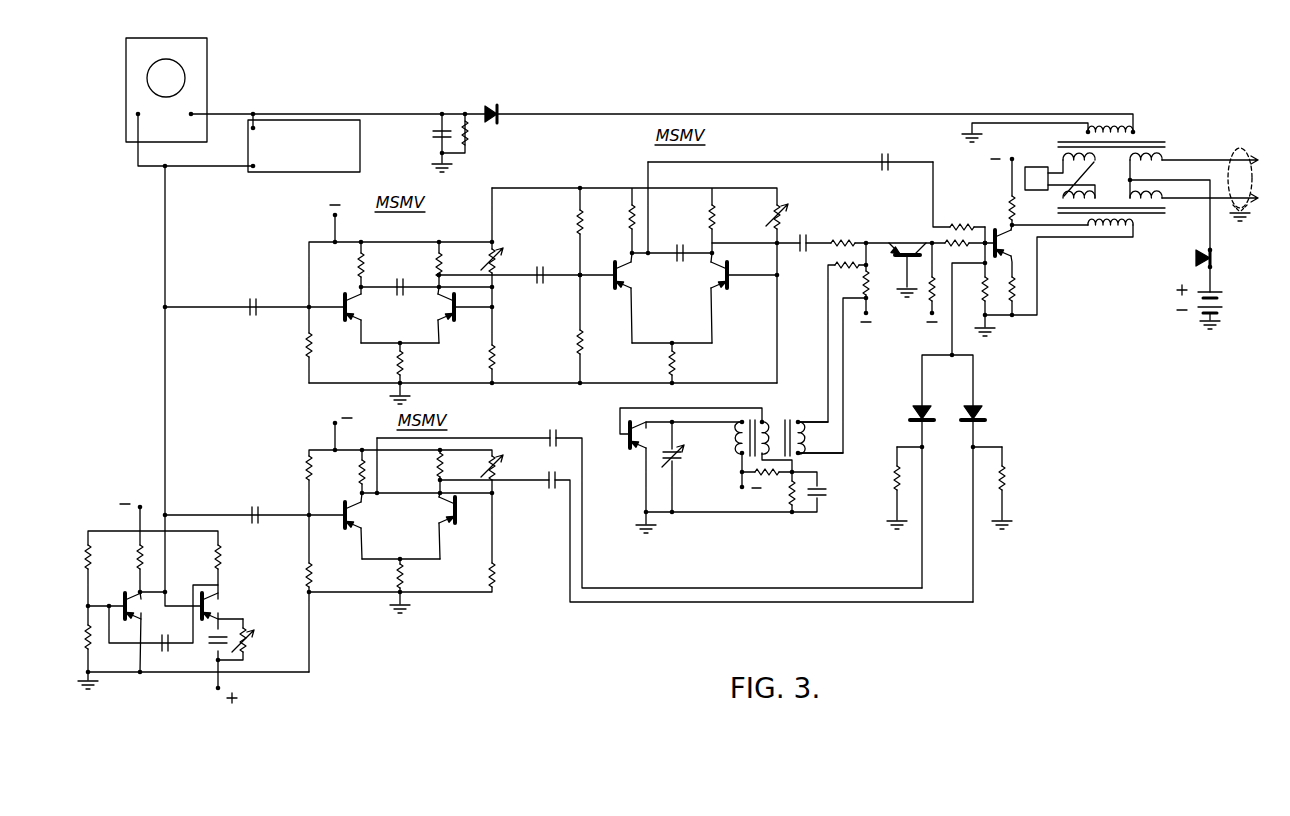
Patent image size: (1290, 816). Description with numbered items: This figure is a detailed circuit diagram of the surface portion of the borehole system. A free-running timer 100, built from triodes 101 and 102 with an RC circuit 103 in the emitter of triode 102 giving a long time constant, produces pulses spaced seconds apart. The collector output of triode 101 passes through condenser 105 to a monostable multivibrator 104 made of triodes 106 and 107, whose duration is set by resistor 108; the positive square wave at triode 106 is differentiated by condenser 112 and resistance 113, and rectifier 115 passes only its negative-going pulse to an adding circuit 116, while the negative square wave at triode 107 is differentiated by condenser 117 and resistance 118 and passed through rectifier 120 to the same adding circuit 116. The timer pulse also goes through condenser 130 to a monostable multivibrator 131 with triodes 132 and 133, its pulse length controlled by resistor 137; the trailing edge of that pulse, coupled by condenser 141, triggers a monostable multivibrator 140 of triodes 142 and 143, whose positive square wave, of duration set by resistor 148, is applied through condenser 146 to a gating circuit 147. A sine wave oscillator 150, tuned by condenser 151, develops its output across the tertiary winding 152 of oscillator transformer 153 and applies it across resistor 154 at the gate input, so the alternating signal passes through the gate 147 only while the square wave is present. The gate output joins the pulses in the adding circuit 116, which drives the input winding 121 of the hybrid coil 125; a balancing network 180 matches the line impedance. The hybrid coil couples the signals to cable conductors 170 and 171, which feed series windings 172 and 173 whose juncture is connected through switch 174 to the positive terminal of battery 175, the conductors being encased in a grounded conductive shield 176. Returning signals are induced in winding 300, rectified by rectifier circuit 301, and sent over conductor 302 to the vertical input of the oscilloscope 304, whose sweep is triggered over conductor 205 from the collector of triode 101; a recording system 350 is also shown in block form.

The timer 100 is at (193, 613).
The triode 101 is at (123, 594).
The triode 102 is at (201, 592).
The RC circuit 103 is at (234, 622).
The monostable multivibrator 104 is at (424, 545).
The condenser 105 is at (236, 504).
The triode 106 is at (344, 527).
The triode 107 is at (458, 523).
The resistor 108 is at (504, 455).
The condenser 112 is at (556, 432).
The resistance 113 is at (892, 477).
The rectifier 115 is at (913, 414).
The adding circuit 116 is at (947, 213).
The condenser 117 is at (560, 470).
The resistance 118 is at (1008, 476).
The rectifier 120 is at (983, 411).
The input winding 121 is at (1107, 233).
The hybrid coil 125 is at (1098, 188).
The condenser 130 is at (257, 297).
The monostable multivibrator 131 is at (444, 295).
The triode 132 is at (343, 319).
The triode 133 is at (450, 320).
The resistor 137 is at (505, 247).
The monostable multivibrator 140 is at (658, 273).
The condenser 141 is at (545, 258).
The triode 142 is at (620, 288).
The triode 143 is at (724, 288).
The condenser 146 is at (807, 232).
The gating circuit 147 is at (903, 221).
The resistor 148 is at (789, 204).
The oscillator 150 is at (731, 477).
The condenser 151 is at (687, 456).
The tertiary winding 152 is at (800, 418).
The oscillator transformer 153 is at (766, 418).
The resistor 154 is at (870, 292).
The cable conductor 170 is at (1186, 157).
The cable conductor 171 is at (1189, 198).
The winding 172 is at (1152, 152).
The winding 173 is at (1152, 208).
The switch 174 is at (1213, 259).
The battery 175 is at (1223, 300).
The conductive shield 176 is at (1236, 156).
The balancing network 180 is at (1039, 167).
The conductor 205 is at (186, 385).
The winding 300 is at (1105, 119).
The rectifier circuit 301 is at (477, 104).
The conductor 302 is at (340, 112).
The indicating means 304 is at (202, 73).
The recording system 350 is at (360, 153).